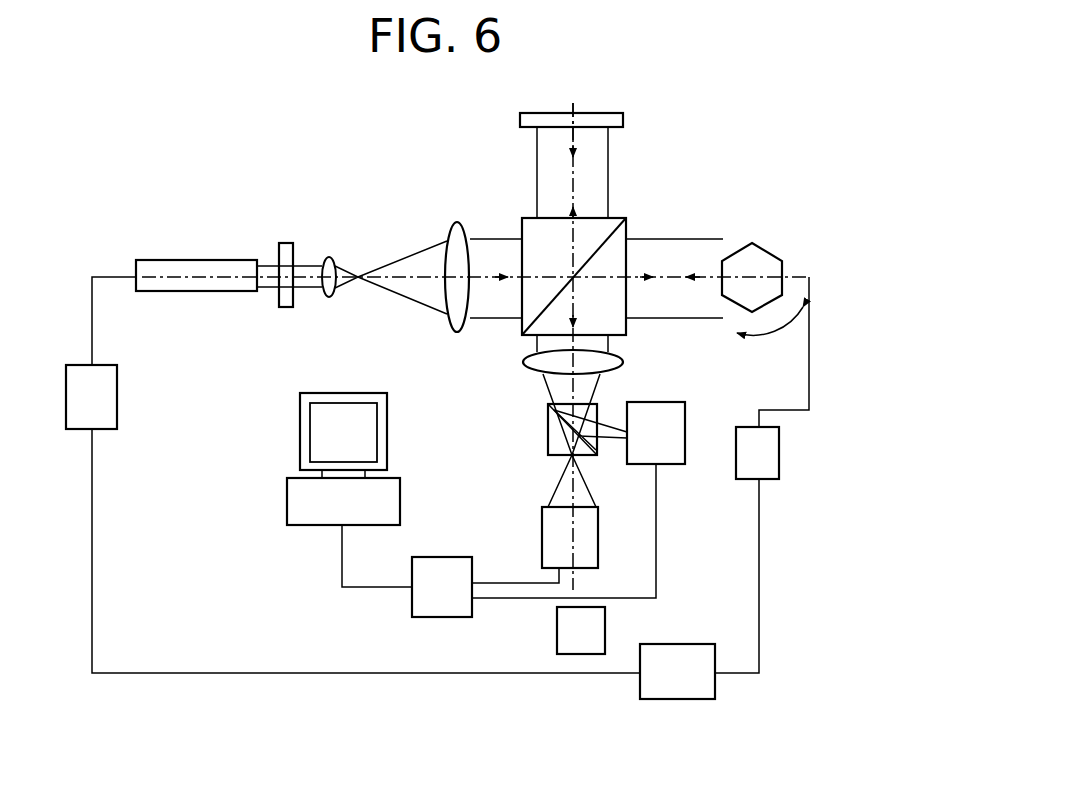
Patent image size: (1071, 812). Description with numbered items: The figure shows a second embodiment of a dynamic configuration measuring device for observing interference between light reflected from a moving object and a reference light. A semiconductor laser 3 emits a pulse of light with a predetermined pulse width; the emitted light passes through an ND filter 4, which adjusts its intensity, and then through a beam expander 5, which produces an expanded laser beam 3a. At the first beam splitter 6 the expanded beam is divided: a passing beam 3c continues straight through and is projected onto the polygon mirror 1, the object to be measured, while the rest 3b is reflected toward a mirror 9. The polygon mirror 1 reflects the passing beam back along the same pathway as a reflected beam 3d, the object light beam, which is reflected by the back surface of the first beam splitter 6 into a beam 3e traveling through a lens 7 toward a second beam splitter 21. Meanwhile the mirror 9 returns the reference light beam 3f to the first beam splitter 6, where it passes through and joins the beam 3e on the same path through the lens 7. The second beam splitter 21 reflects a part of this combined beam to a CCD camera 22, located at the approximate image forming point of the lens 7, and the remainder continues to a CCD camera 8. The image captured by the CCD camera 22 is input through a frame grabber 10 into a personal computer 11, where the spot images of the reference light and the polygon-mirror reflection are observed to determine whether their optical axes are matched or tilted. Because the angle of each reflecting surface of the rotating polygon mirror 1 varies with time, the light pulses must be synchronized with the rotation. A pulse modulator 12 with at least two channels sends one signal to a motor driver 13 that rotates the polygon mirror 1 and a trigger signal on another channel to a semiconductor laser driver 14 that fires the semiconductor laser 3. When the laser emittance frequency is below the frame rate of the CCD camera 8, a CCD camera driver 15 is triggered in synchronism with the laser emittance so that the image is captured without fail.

The polygon mirror 1 is at (760, 248).
The semiconductor laser 3 is at (206, 260).
The expanded laser beam 3a is at (490, 264).
The reflected part of the expanded laser beam 3b is at (568, 238).
The passing beam 3c is at (613, 275).
The reflected beam 3d is at (708, 277).
The beam toward second beam splitter 3e is at (575, 316).
The reference light beam 3f is at (571, 133).
The ND filter 4 is at (289, 243).
The beam expander 5 is at (457, 334).
The first beam splitter 6 is at (613, 217).
The lens 7 is at (619, 355).
The CCD camera 8 is at (598, 533).
The mirror 9 is at (520, 118).
The frame grabber 10 is at (447, 557).
The personal computer 11 is at (396, 478).
The pulse modulator 12 is at (697, 644).
The motor driver 13 is at (779, 444).
The semiconductor laser driver 14 is at (117, 392).
The CCD camera driver 15 is at (557, 635).
The second beam splitter 21 is at (548, 432).
The CCD camera 22 is at (668, 402).